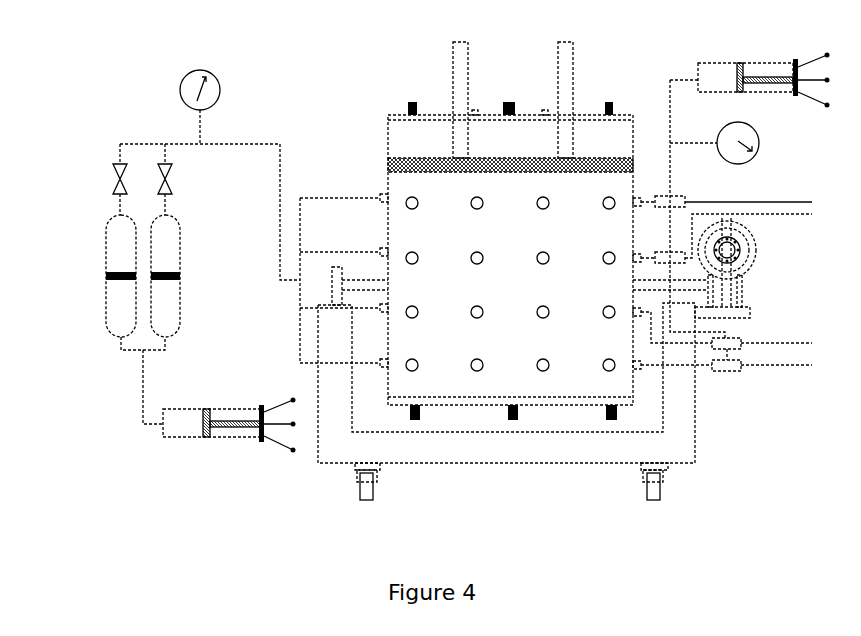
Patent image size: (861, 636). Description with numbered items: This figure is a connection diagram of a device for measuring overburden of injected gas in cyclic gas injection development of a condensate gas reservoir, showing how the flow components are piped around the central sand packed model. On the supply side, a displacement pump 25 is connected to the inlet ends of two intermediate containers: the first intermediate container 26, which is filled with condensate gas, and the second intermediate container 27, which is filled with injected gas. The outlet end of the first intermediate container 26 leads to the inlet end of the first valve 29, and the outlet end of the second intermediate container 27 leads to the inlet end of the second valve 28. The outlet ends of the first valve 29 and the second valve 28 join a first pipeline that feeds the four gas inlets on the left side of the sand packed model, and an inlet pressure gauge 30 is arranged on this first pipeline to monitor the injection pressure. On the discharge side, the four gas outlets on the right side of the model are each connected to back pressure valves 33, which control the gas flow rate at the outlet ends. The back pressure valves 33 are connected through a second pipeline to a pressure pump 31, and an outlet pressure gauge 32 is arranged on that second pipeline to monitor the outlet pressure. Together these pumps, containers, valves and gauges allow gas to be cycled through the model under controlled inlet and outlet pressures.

The displacement pump 25 is at (185, 438).
The first intermediate container 26 is at (182, 262).
The second intermediate container 27 is at (107, 270).
The second valve 28 is at (116, 170).
The first valve 29 is at (170, 172).
The inlet pressure gauge 30 is at (216, 70).
The pressure pump 31 is at (755, 63).
The outlet pressure gauge 32 is at (760, 143).
The back pressure valve 33 is at (685, 196).